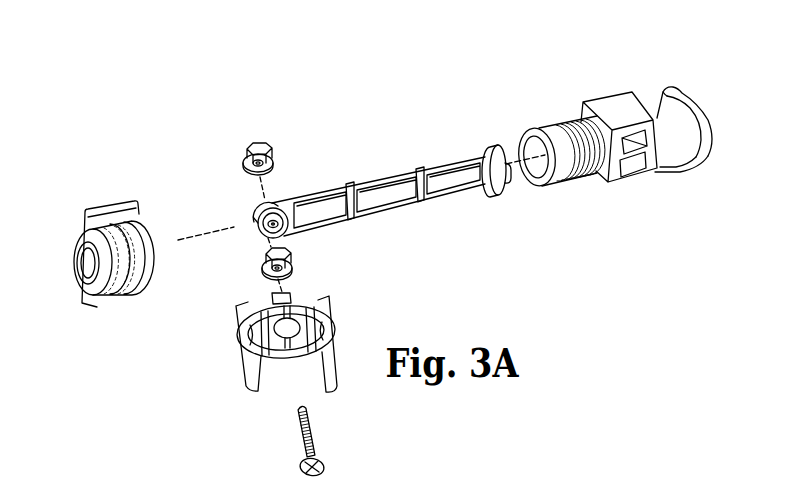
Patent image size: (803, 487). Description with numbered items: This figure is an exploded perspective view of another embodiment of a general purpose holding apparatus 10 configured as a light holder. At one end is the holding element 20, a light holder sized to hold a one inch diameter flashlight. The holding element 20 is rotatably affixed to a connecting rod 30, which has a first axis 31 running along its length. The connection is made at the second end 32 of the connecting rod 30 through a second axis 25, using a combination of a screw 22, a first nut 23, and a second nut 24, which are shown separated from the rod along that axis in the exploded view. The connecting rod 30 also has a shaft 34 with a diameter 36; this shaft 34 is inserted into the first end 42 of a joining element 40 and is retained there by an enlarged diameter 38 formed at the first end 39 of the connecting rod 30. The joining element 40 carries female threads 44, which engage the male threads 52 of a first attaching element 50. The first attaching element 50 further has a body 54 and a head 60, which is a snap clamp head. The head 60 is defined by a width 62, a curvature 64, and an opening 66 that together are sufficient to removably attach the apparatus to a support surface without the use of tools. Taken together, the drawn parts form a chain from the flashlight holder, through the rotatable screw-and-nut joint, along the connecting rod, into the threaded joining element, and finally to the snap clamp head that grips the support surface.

The general purpose holding apparatus 10 is at (463, 56).
The holding element 20 is at (346, 314).
The screw 22 is at (313, 425).
The first nut 23 is at (291, 267).
The second nut 24 is at (244, 150).
The second axis 25 is at (264, 178).
The connecting rod 30 is at (401, 212).
The first axis 31 is at (208, 229).
The second end 32 is at (254, 225).
The shaft 34 is at (393, 186).
The diameter 36 is at (423, 212).
The enlarged diameter 38 is at (482, 150).
The first end 39 is at (506, 178).
The joining element 40 is at (138, 299).
The first end 42 is at (85, 268).
The female threads 44 is at (143, 231).
The first attaching element 50 is at (611, 84).
The male threads 52 is at (561, 129).
The body 54 is at (585, 168).
The head 60 is at (643, 179).
The width 62 is at (685, 98).
The curvature 64 is at (692, 164).
The opening 66 is at (653, 101).